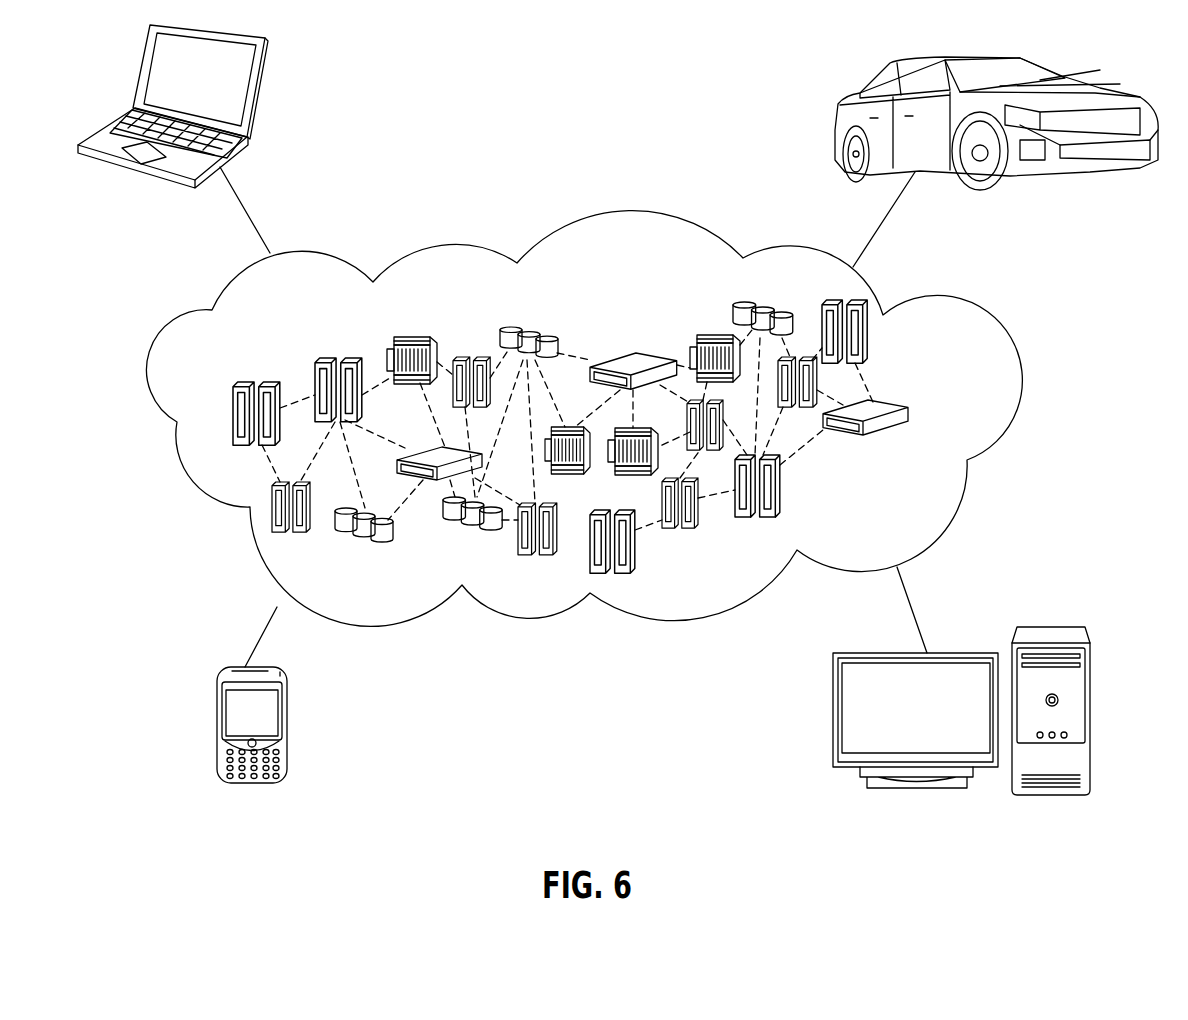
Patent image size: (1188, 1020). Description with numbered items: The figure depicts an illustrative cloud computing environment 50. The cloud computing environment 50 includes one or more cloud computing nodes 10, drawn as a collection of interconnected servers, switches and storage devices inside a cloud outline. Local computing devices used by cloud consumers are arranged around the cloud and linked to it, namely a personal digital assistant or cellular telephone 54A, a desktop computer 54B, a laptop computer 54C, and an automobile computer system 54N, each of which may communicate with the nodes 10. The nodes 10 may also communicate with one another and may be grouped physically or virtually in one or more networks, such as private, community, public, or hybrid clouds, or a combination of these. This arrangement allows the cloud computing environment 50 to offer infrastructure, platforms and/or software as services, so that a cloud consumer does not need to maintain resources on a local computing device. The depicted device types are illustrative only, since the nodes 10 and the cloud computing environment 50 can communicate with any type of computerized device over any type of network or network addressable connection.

The cloud computing nodes 10 is at (952, 414).
The cloud computing environment 50 is at (972, 328).
The personal digital assistant or cellular telephone 54A is at (217, 728).
The desktop computer 54B is at (1053, 623).
The laptop computer 54C is at (257, 92).
The automobile computer system 54N is at (842, 100).